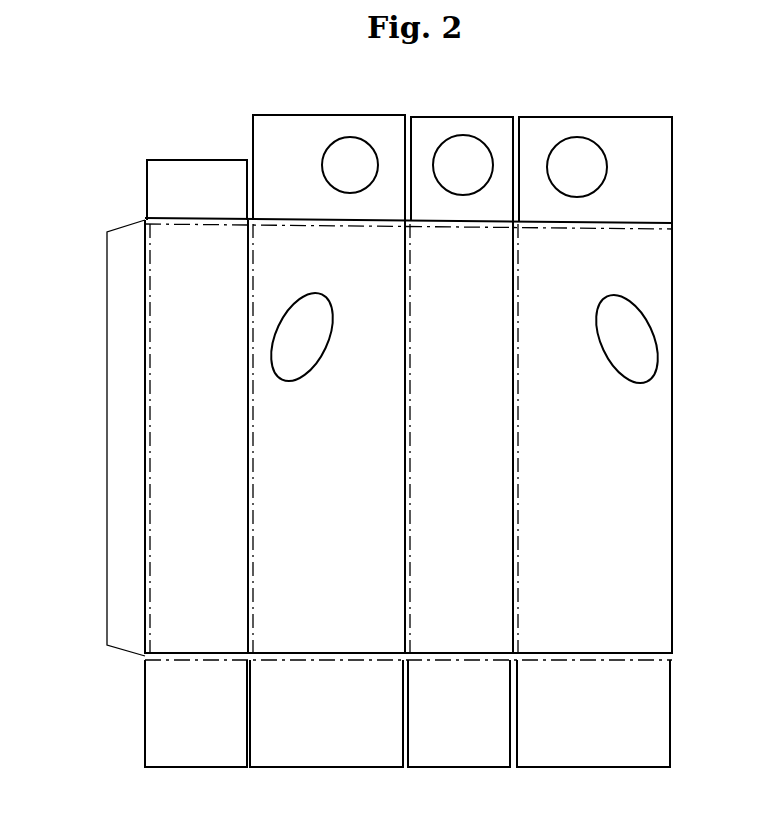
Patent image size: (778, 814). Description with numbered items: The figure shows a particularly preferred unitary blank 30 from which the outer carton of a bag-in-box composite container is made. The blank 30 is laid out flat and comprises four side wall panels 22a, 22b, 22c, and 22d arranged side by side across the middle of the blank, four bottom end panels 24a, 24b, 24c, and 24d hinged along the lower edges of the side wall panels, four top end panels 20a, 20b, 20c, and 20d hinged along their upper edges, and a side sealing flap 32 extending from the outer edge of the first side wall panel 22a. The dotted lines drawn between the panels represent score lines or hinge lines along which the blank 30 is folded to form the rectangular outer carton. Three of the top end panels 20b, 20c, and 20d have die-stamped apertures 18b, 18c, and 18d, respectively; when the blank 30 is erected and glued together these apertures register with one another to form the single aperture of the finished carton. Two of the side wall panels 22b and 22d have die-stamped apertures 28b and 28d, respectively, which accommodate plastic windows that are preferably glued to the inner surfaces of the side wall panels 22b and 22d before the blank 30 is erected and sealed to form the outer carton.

The unitary blank 30 is at (557, 82).
The side sealing flap 32 is at (117, 361).
The die-stamped aperture 18b is at (340, 148).
The die-stamped aperture 18c is at (457, 158).
The die-stamped aperture 18d is at (573, 157).
The top end panel 20a is at (220, 195).
The top end panel 20b is at (304, 155).
The top end panel 20c is at (460, 218).
The top end panel 20d is at (662, 160).
The side wall panel 22a is at (215, 444).
The side wall panel 22b is at (349, 444).
The side wall panel 22c is at (477, 444).
The side wall panel 22d is at (604, 444).
The bottom end panel 24a is at (214, 714).
The bottom end panel 24b is at (344, 714).
The bottom end panel 24c is at (477, 714).
The bottom end panel 24d is at (614, 714).
The die-stamped aperture 28b is at (288, 328).
The die-stamped aperture 28d is at (634, 333).